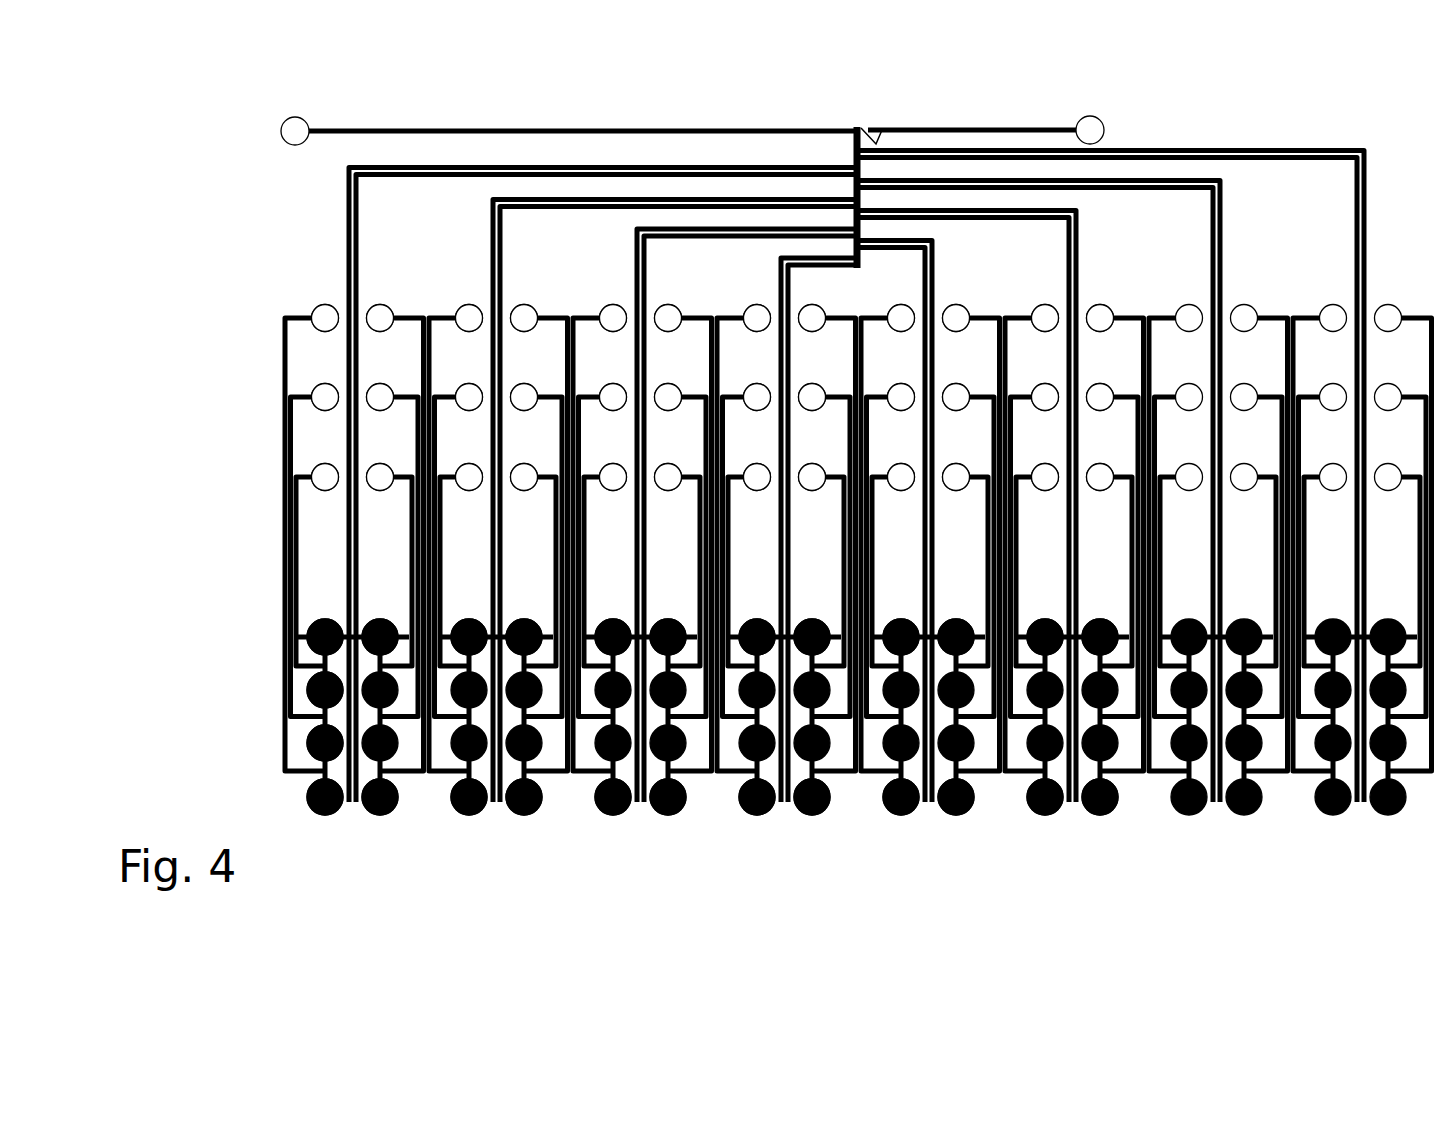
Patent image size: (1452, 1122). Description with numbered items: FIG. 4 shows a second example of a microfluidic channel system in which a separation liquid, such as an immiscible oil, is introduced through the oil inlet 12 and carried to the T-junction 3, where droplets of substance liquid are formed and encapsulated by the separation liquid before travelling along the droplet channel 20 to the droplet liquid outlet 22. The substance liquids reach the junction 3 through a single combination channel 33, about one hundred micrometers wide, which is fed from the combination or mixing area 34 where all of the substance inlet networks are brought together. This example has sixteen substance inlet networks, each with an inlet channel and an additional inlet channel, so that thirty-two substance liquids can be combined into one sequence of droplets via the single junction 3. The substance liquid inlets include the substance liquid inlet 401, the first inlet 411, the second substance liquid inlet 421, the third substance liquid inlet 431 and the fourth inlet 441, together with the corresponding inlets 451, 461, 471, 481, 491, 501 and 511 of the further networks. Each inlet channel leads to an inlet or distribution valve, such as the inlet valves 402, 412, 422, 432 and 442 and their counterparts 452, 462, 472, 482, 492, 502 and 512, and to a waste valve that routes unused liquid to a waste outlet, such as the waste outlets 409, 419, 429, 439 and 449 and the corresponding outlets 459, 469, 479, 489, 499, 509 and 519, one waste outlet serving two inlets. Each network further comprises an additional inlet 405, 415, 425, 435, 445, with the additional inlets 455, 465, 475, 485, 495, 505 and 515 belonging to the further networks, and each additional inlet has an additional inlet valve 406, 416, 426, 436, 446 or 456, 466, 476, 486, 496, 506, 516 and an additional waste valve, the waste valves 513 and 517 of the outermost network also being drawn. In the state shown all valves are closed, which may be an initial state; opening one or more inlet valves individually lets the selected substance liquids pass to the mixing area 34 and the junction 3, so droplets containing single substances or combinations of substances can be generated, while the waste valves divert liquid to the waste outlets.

The oil inlet 12 is at (285, 122).
The droplet liquid outlet 22 is at (1092, 116).
The droplet channel 20 is at (1021, 127).
The junction 3 is at (856, 127).
The combination channel 33 is at (853, 141).
The combination area 34 is at (879, 141).
The inlet well 511 is at (322, 305).
The inlet well 501 is at (385, 305).
The inlet well 491 is at (466, 305).
The inlet well 481 is at (529, 305).
The inlet well 471 is at (610, 305).
The inlet well 461 is at (673, 305).
The inlet well 451 is at (754, 305).
The fourth inlet 441 is at (817, 306).
The third substance liquid inlet 431 is at (898, 305).
The second substance liquid inlet 421 is at (961, 305).
The first inlet 411 is at (1042, 305).
The substance liquid inlet 401 is at (1105, 305).
The inlet well 519 is at (325, 411).
The inlet well 509 is at (380, 411).
The inlet well 499 is at (469, 411).
The inlet well 489 is at (524, 411).
The inlet well 479 is at (613, 411).
The inlet well 469 is at (668, 411).
The inlet well 459 is at (757, 411).
The waste outlet 449 is at (812, 411).
The waste outlet 439 is at (901, 411).
The waste outlet 429 is at (956, 411).
The first waste outlet 419 is at (1045, 411).
The waste outlet 409 is at (1100, 411).
The inlet well 515 is at (325, 491).
The inlet well 505 is at (380, 491).
The inlet well 495 is at (469, 491).
The inlet well 485 is at (524, 491).
The inlet well 475 is at (613, 491).
The inlet well 465 is at (668, 491).
The inlet well 455 is at (757, 491).
The additional inlet 445 is at (812, 491).
The additional inlet 435 is at (901, 491).
The additional inlet 425 is at (956, 491).
The first additional inlet 415 is at (1045, 491).
The additional inlet 405 is at (1100, 491).
The culture chamber 516 is at (324, 619).
The culture chamber 506 is at (382, 619).
The culture chamber 496 is at (468, 619).
The culture chamber 486 is at (526, 619).
The culture chamber 476 is at (612, 619).
The culture chamber 466 is at (670, 619).
The culture chamber 456 is at (756, 619).
The additional inlet valve 446 is at (814, 619).
The additional inlet valve 436 is at (900, 619).
The additional inlet valve 426 is at (958, 619).
The additional first inlet valve 416 is at (1044, 619).
The additional inlet valve 406 is at (1102, 619).
The culture chamber 517 is at (306, 689).
The culture chamber 513 is at (306, 744).
The culture chamber 512 is at (325, 815).
The culture chamber 502 is at (380, 815).
The culture chamber 492 is at (469, 815).
The culture chamber 482 is at (524, 815).
The culture chamber 472 is at (613, 815).
The culture chamber 462 is at (668, 815).
The culture chamber 452 is at (757, 815).
The fourth inlet valve 442 is at (812, 815).
The inlet valve 432 is at (901, 815).
The inlet valve 422 is at (956, 815).
The first inlet valve 412 is at (1045, 815).
The inlet valve 402 is at (1100, 815).